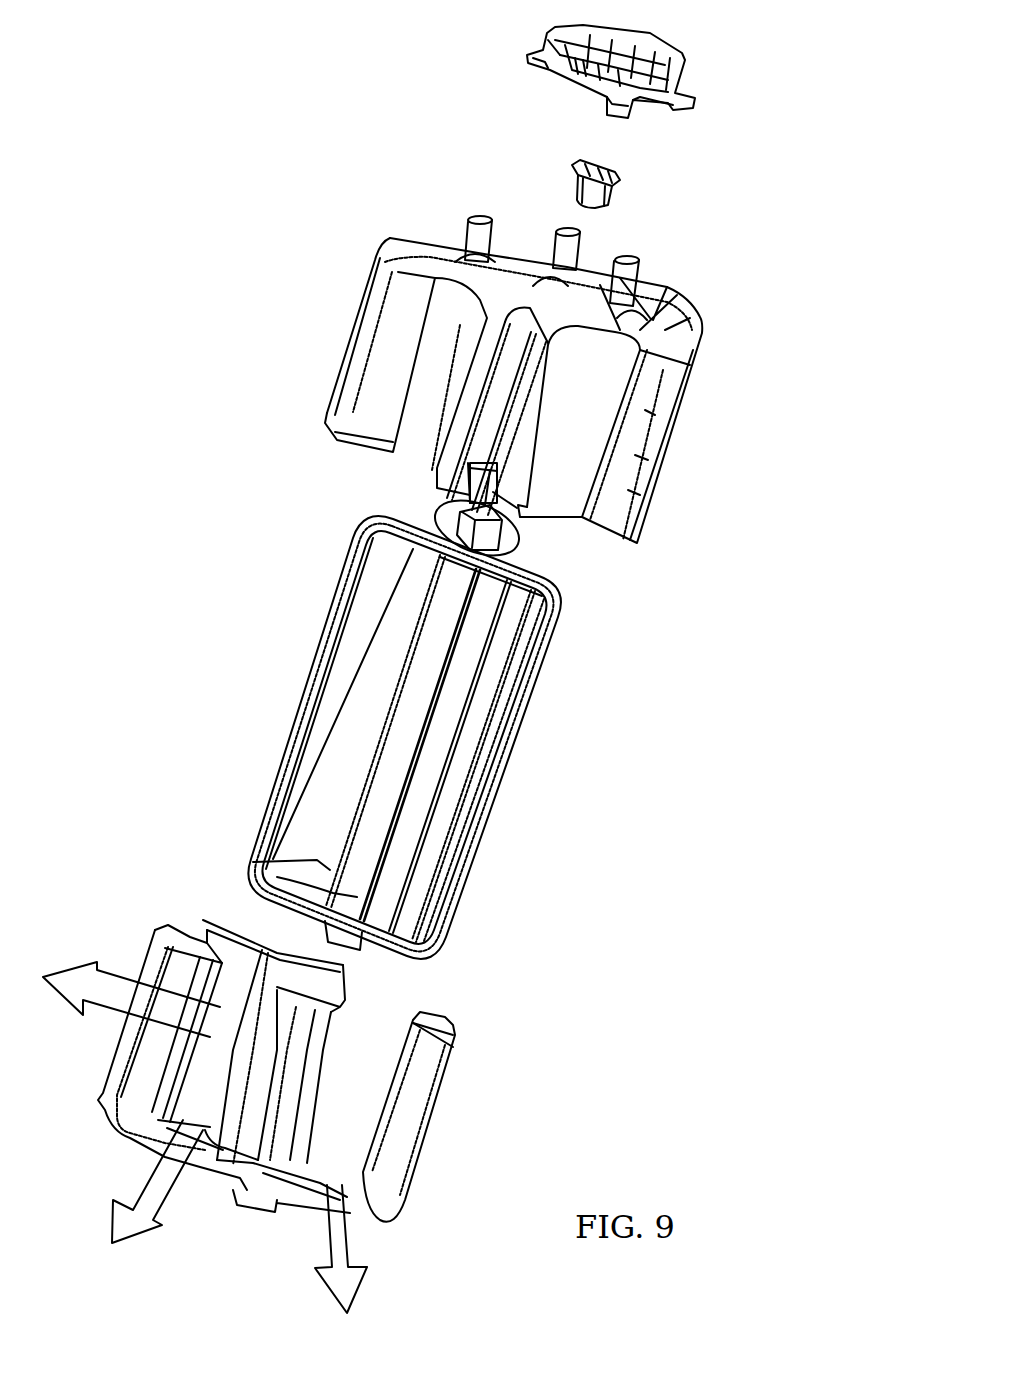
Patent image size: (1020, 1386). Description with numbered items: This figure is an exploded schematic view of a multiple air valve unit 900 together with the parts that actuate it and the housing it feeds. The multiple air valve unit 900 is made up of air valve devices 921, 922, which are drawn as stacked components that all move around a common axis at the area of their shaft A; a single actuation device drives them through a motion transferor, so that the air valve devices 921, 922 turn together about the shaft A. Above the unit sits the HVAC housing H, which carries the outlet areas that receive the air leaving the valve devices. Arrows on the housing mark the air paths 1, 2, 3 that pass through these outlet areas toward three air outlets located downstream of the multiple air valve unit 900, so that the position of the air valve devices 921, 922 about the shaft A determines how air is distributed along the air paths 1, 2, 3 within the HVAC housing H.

The multiple air valve unit 900 is at (272, 612).
The air valve device 921 is at (515, 753).
The air valve device 922 is at (295, 731).
The HVAC housing H is at (663, 280).
The shaft A is at (515, 541).
The air path 1 is at (131, 999).
The air path 2 is at (157, 1181).
The air path 3 is at (341, 1249).